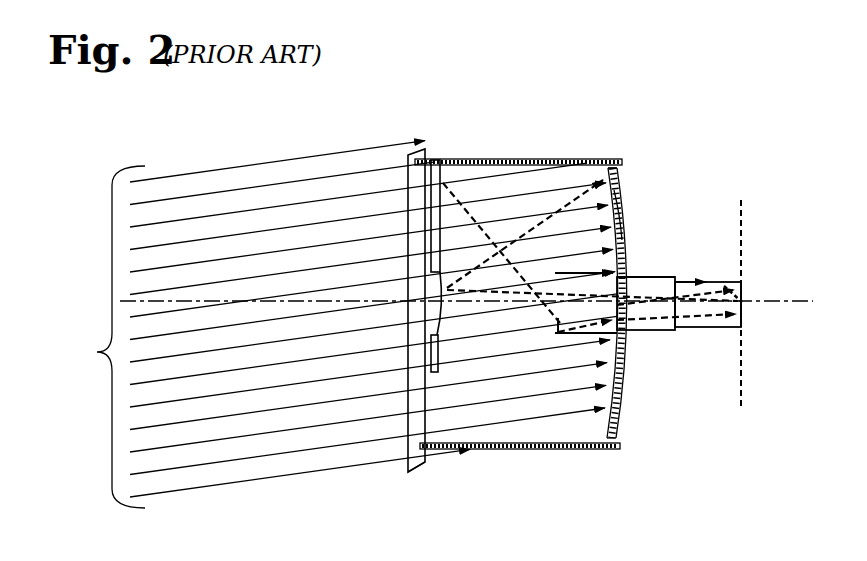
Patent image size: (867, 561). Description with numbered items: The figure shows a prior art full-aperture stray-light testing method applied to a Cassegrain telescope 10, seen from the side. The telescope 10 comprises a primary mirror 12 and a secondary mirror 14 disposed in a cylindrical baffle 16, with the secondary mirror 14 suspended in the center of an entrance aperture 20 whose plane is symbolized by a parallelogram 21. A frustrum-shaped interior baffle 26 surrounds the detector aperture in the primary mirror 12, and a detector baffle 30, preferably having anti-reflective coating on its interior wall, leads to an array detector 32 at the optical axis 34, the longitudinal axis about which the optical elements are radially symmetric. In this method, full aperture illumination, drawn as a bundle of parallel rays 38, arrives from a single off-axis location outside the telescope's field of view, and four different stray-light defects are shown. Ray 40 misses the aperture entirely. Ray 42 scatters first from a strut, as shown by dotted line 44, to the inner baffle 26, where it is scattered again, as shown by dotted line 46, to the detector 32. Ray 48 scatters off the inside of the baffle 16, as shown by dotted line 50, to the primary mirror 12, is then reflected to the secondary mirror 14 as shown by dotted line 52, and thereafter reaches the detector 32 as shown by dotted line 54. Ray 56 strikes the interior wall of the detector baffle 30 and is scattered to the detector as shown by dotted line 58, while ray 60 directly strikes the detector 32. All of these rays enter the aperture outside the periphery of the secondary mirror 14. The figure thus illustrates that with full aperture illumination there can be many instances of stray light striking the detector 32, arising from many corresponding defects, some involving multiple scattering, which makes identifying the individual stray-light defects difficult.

The Cassegrain telescope 10 is at (684, 83).
The primary mirror 12 is at (607, 420).
The secondary mirror 14 is at (438, 290).
The cylindrical baffle 16 is at (520, 159).
The entrance aperture 20 is at (407, 428).
The parallelogram 21 is at (425, 463).
The interior baffle 26 is at (584, 272).
The detector baffle 30 is at (730, 283).
The array detector 32 is at (745, 326).
The optical axis 34 is at (780, 300).
The incoming light beam 38 is at (328, 335).
The ray 40 is at (300, 157).
The ray 42 is at (383, 167).
The dotted line 44 is at (463, 207).
The dotted line 46 is at (660, 331).
The ray 48 is at (212, 215).
The dotted line 50 is at (605, 167).
The dotted line 52 is at (623, 200).
The dotted line 54 is at (656, 280).
The ray 56 is at (167, 362).
The dotted line 58 is at (741, 268).
The ray 60 is at (220, 373).